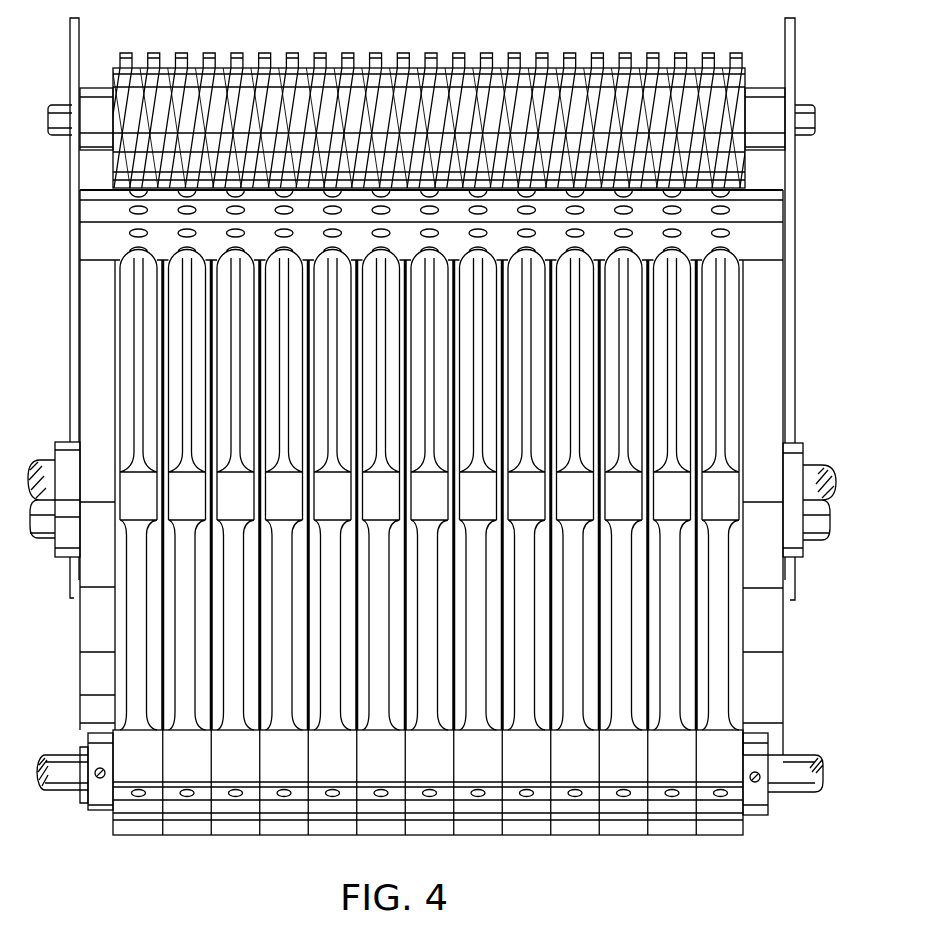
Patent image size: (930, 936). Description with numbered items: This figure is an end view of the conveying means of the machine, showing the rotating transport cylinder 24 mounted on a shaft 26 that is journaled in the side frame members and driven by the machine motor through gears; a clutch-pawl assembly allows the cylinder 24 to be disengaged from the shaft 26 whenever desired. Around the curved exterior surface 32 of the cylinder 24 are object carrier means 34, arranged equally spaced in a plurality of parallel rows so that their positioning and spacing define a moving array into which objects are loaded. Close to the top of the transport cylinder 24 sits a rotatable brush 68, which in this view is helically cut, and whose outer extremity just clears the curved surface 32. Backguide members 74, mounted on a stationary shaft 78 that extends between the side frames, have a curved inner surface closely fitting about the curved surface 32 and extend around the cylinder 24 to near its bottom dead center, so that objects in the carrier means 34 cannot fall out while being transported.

The rotatable brush 68 is at (573, 103).
The object carrier means 34 is at (778, 248).
The curved surface 32 is at (100, 275).
The shaft 26 is at (825, 465).
The rotating transport cylinder 24 is at (768, 717).
The stationary shaft 78 is at (68, 777).
The backguide members 74 is at (133, 718).